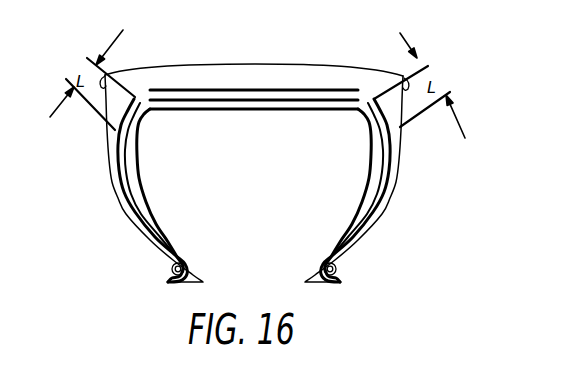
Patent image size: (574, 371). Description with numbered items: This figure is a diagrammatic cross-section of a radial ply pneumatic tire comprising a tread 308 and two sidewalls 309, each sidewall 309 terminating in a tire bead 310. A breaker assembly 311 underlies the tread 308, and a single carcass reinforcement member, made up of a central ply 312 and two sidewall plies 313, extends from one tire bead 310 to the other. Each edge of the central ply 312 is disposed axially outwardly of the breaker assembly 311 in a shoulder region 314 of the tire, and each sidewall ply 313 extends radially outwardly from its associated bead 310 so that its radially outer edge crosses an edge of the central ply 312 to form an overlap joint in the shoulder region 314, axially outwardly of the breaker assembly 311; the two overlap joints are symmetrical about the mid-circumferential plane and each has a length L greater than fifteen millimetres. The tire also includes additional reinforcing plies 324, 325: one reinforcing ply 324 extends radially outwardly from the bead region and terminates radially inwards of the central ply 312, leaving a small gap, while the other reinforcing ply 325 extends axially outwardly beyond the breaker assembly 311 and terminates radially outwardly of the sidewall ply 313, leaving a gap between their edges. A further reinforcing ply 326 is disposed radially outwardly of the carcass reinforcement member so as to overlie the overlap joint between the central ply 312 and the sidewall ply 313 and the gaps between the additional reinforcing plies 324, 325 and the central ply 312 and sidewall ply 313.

The tread 308 is at (292, 63).
The sidewall 309 is at (124, 216).
The tire bead 310 is at (169, 268).
The breaker assembly 311 is at (237, 88).
The central ply 312 is at (198, 103).
The sidewall ply 313 is at (117, 158).
The shoulder region 314 is at (107, 72).
The reinforcing ply 324 is at (127, 181).
The reinforcing ply 325 is at (243, 102).
The further reinforcing ply 326 is at (104, 119).